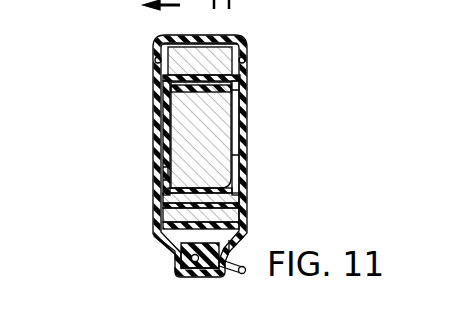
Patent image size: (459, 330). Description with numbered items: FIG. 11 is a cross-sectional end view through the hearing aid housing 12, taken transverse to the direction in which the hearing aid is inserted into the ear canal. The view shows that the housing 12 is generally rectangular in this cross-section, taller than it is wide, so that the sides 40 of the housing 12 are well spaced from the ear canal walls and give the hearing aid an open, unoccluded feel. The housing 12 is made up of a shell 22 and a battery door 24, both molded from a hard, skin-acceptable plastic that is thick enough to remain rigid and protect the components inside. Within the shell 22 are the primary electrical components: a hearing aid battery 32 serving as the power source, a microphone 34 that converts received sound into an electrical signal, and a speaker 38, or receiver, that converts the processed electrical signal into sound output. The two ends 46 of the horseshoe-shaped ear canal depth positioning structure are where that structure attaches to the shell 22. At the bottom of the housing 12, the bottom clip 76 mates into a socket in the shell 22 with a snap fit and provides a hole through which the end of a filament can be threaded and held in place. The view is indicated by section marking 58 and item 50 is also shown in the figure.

The viewing direction arrow 58 is at (75, 57).
The hearing aid housing 12 is at (156, 124).
The cap 50 is at (192, 37).
The ends 46 is at (157, 60).
The microphone 34 is at (245, 73).
The sides 40 is at (163, 160).
The hearing aid battery 32 is at (223, 156).
The battery door 24 is at (164, 194).
The shell 22 is at (160, 217).
The speaker 38 is at (240, 219).
The bottom clip 76 is at (178, 262).